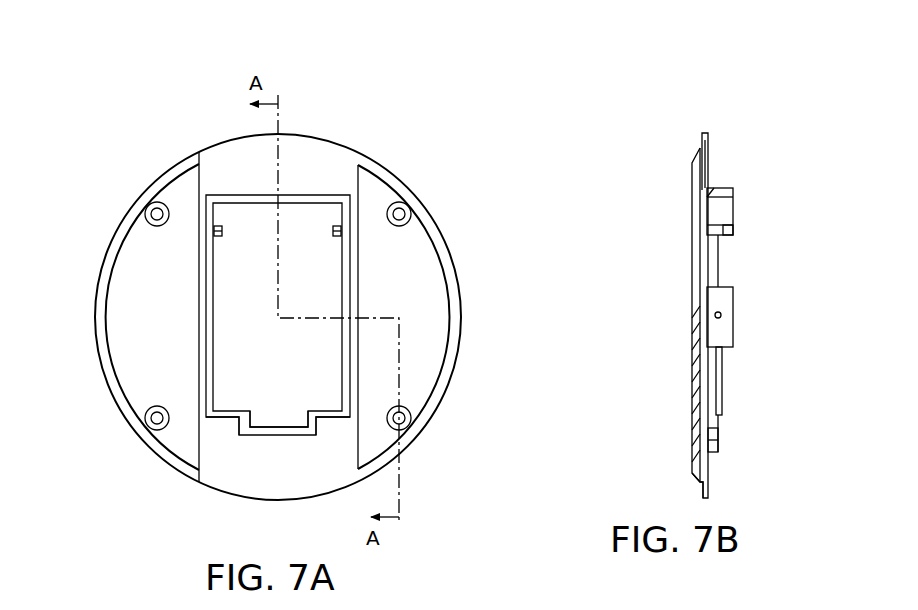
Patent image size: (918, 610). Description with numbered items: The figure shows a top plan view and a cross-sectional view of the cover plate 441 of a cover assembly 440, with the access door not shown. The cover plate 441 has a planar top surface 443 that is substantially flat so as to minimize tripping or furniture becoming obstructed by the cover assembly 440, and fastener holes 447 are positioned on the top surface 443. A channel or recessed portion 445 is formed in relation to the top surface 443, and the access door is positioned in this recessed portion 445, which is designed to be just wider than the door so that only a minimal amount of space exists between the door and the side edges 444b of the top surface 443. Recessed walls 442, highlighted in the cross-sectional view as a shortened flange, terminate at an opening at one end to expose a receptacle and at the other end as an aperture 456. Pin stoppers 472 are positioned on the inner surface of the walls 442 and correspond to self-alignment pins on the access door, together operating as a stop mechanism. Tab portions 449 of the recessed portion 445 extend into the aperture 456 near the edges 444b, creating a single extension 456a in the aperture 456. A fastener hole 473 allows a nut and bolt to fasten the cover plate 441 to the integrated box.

In FIG. 7A, the cover assembly 440 is at (384, 96).
In FIG. 7B, the cover assembly 440 is at (731, 114).
In FIG. 7A, the cover plate 441 is at (112, 358).
In FIG. 7B, the cover plate 441 is at (690, 172).
In FIG. 7B, the recessed walls 442 is at (723, 396).
In FIG. 7A, the top surface 443 is at (428, 350).
In FIG. 7B, the side edges 444b is at (694, 255).
In FIG. 7A, the recessed portion 445 is at (305, 463).
In FIG. 7B, the recessed portion 445 is at (700, 490).
In FIG. 7A, the fastener holes 447 is at (400, 206).
In FIG. 7A, the tab portions 449 is at (225, 428).
In FIG. 7A, the aperture 456 is at (314, 372).
In FIG. 7A, the extension 456a is at (277, 421).
In FIG. 7A, the pin stoppers 472 is at (223, 232).
In FIG. 7B, the pin stoppers 472 is at (734, 232).
In FIG. 7B, the fastener hole 473 is at (722, 315).